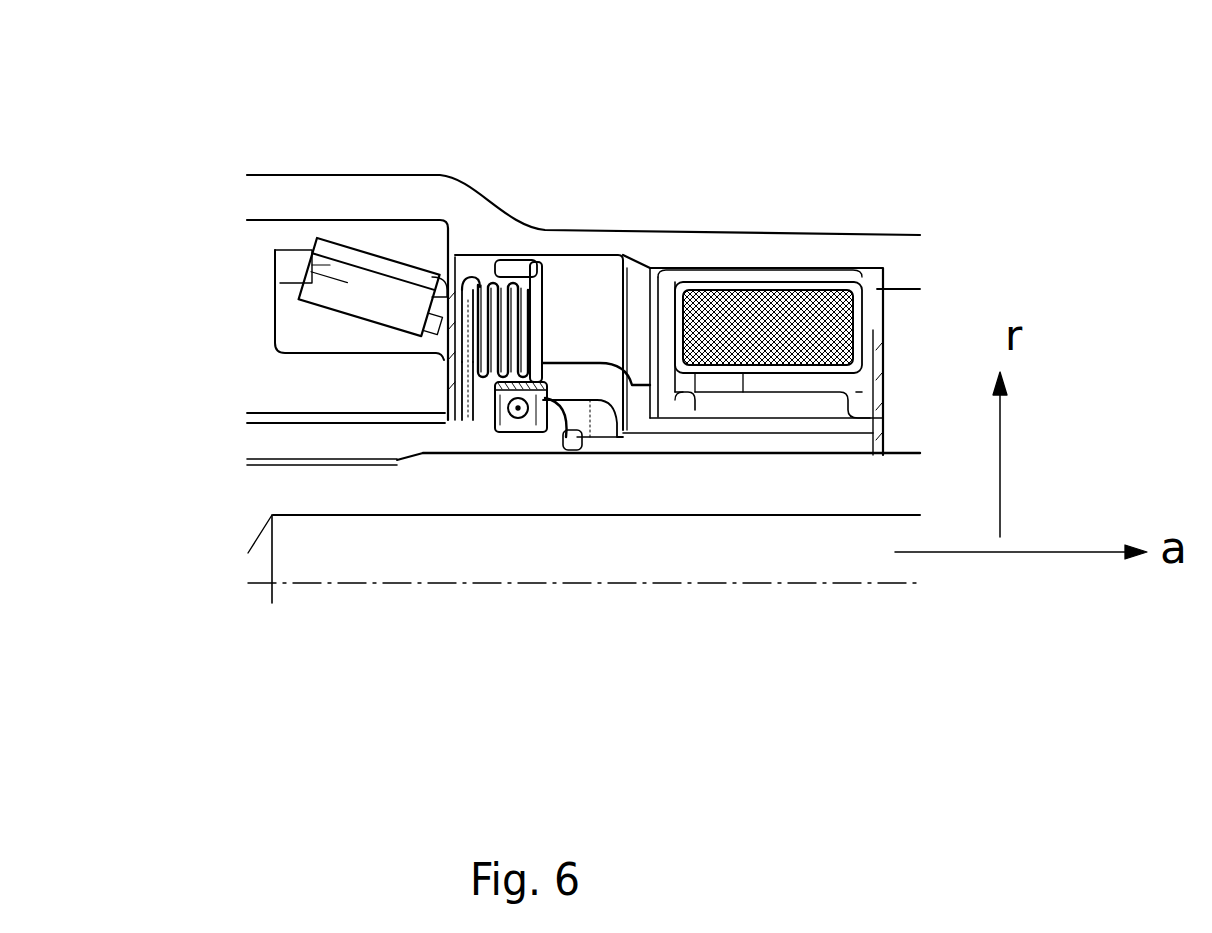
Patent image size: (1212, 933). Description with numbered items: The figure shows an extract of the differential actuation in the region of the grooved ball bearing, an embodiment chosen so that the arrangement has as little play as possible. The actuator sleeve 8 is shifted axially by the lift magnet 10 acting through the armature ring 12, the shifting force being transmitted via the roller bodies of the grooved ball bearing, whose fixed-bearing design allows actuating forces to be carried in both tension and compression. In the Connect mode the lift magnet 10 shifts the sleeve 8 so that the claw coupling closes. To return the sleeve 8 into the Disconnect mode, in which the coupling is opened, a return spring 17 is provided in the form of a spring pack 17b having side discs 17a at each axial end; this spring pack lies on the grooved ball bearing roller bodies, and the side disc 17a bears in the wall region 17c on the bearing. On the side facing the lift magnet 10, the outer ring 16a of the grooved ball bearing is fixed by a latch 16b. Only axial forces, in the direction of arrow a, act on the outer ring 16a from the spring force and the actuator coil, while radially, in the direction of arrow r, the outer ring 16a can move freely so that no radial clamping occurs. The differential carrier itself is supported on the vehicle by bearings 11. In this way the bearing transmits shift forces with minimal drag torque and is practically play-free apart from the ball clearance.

The actuator sleeve 8 is at (335, 436).
The lift magnet 10 is at (880, 306).
The bearings 11 is at (283, 262).
The armature ring 12 is at (783, 432).
The outer ring 16a is at (519, 418).
The latch 16b is at (546, 420).
The return spring 17 is at (530, 287).
The side discs 17a is at (540, 297).
The spring pack 17b is at (480, 283).
The wall region 17c is at (475, 415).